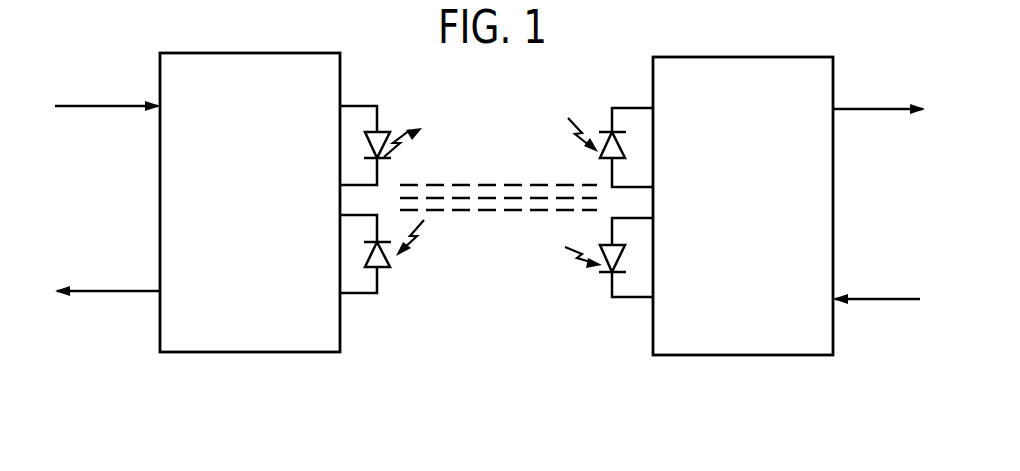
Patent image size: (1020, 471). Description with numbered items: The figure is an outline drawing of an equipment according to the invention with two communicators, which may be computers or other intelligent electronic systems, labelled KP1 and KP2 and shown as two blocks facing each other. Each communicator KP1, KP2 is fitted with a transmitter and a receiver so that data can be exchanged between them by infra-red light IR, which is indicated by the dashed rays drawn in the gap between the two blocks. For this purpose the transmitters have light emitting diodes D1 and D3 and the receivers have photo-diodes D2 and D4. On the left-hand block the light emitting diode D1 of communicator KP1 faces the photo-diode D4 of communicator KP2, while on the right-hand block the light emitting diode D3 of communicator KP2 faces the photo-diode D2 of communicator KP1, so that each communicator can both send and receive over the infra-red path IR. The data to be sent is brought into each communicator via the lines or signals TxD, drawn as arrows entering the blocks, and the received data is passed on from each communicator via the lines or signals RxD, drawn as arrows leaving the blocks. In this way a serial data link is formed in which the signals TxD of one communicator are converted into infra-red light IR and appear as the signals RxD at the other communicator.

The communicator KP1 is at (250, 202).
The communicator KP2 is at (743, 206).
The light emitting diode D1 is at (393, 135).
The photo-diode D2 is at (391, 255).
The light emitting diode D3 is at (607, 270).
The photo-diode D4 is at (603, 130).
The infra-red light IR is at (498, 174).
The transmit data line TxD is at (87, 104).
The receive data line RxD is at (97, 290).